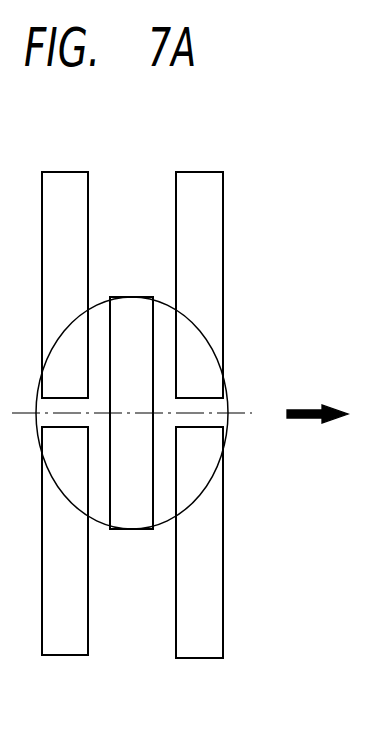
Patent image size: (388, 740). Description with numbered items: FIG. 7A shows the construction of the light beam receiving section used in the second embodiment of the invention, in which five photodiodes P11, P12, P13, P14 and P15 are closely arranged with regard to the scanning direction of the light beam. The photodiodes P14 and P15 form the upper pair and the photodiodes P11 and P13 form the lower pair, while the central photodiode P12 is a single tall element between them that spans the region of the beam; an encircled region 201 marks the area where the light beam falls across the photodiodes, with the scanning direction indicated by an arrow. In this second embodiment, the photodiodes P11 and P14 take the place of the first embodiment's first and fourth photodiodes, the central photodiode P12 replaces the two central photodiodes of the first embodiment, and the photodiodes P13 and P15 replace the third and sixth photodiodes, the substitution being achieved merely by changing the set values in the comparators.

The pressure sensor / probe region 201 is at (228, 405).
The photodiode P14 is at (75, 172).
The photodiode P11 is at (76, 655).
The photodiode P15 is at (205, 172).
The photodiode P13 is at (213, 658).
The central photodiode P12 is at (137, 530).